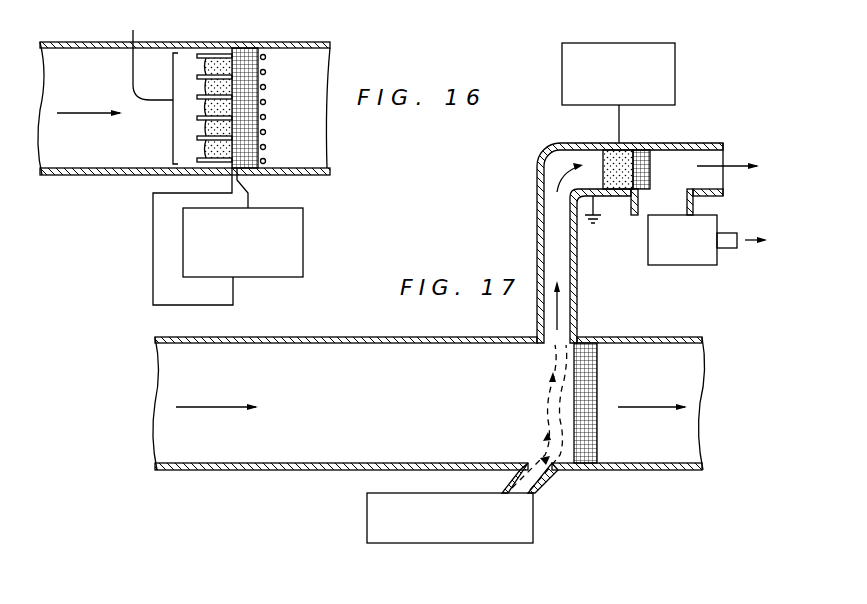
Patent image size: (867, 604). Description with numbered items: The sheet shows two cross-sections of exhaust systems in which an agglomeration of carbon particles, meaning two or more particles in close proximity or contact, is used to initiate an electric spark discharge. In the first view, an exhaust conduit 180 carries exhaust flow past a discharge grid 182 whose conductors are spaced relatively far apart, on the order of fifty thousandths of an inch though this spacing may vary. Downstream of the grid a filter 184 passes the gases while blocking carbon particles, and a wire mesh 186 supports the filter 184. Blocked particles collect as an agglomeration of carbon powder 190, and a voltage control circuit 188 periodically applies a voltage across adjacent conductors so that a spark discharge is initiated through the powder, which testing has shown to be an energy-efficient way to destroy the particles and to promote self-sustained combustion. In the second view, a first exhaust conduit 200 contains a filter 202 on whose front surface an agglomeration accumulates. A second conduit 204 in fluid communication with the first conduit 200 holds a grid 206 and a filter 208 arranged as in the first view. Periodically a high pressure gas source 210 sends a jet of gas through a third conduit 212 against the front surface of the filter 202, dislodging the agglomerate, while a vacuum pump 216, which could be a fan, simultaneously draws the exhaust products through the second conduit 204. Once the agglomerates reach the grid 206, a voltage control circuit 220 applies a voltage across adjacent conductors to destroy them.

In FIG. 16, the exhaust conduit 180 is at (78, 41).
In FIG. 16, the discharge grid 182 is at (143, 86).
In FIG. 16, the filter 184 is at (247, 48).
In FIG. 16, the wire mesh 186 is at (265, 87).
In FIG. 16, the voltage control circuit 188 is at (303, 243).
In FIG. 16, the agglomeration of carbon powder or particles 190 is at (217, 45).
In FIG. 17, the first exhaust conduit 200 is at (245, 470).
In FIG. 17, the filter 202 is at (588, 470).
In FIG. 17, the second conduit 204 is at (538, 229).
In FIG. 17, the grid 206 is at (605, 152).
In FIG. 17, the filter 208 is at (652, 155).
In FIG. 17, the high pressure gas source 210 is at (367, 525).
In FIG. 17, the third conduit 212 is at (548, 472).
In FIG. 17, the vacuum pump 216 is at (695, 266).
In FIG. 17, the voltage control circuit 220 is at (600, 43).